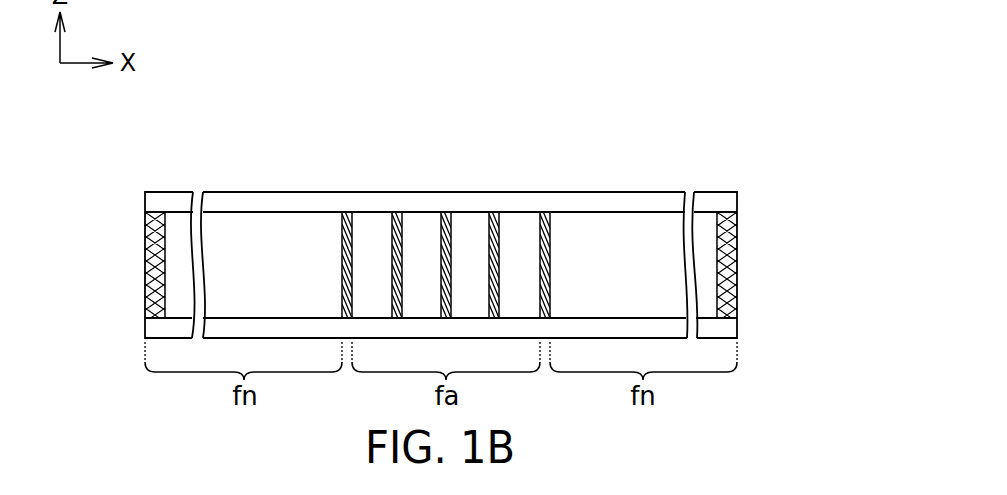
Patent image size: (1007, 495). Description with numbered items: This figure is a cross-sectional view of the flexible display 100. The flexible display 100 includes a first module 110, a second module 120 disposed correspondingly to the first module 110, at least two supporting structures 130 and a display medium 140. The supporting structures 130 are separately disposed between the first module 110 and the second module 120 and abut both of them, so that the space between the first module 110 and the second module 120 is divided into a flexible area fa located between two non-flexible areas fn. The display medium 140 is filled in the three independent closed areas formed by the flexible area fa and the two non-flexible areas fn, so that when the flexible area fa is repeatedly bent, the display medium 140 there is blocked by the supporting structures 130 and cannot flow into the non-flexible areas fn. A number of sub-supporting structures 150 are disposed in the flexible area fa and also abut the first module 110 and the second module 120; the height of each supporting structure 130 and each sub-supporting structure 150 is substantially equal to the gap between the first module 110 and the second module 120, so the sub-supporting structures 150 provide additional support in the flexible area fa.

The flexible display 100 is at (842, 150).
The first module 110 is at (722, 329).
The second module 120 is at (713, 200).
The supporting structures 130 is at (348, 222).
The display medium 140 is at (272, 222).
The sub-supporting structures 150 is at (494, 222).